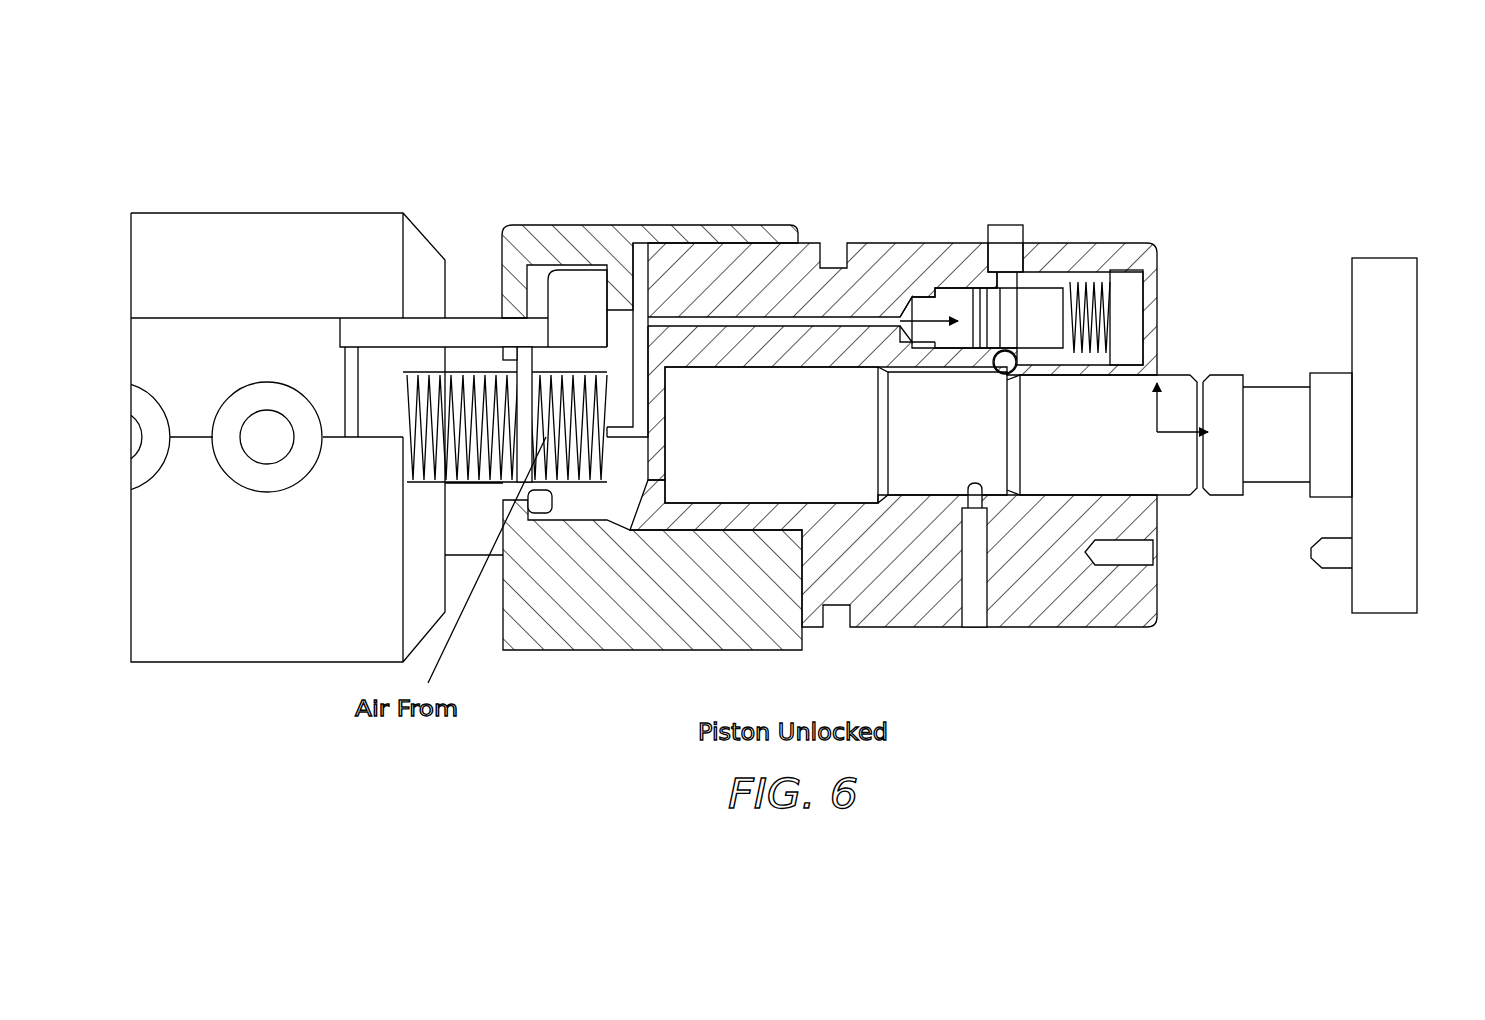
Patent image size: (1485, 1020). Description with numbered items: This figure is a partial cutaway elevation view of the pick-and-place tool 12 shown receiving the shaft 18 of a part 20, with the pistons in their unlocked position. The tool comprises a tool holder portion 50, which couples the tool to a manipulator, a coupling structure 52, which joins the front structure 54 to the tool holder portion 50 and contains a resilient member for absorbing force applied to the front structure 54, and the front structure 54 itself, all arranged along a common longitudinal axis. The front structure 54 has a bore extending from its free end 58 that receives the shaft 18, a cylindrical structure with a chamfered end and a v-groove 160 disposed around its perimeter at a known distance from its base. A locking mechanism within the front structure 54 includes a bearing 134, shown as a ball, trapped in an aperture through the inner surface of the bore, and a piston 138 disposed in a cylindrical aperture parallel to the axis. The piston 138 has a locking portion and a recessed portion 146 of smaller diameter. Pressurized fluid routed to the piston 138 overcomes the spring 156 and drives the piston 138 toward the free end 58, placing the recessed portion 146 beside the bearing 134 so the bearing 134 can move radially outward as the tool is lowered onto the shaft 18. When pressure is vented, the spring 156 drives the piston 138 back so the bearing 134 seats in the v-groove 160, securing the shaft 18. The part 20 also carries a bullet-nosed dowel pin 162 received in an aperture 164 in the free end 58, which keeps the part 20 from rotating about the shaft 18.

The pick-and-place tool 12 is at (927, 345).
The shaft 18 is at (1270, 407).
The part 20 is at (1375, 383).
The tool holder portion 50 is at (265, 162).
The coupling structure 52 is at (648, 168).
The front structure 54 is at (1095, 150).
The free end 58 is at (1160, 600).
The bearing 134 is at (995, 367).
The piston 138 is at (1037, 280).
The recessed portion 146 is at (1003, 305).
The spring 156 is at (1105, 275).
The v-groove 160 is at (1203, 382).
The dowel pin 162 is at (1327, 560).
The aperture 164 is at (1140, 553).